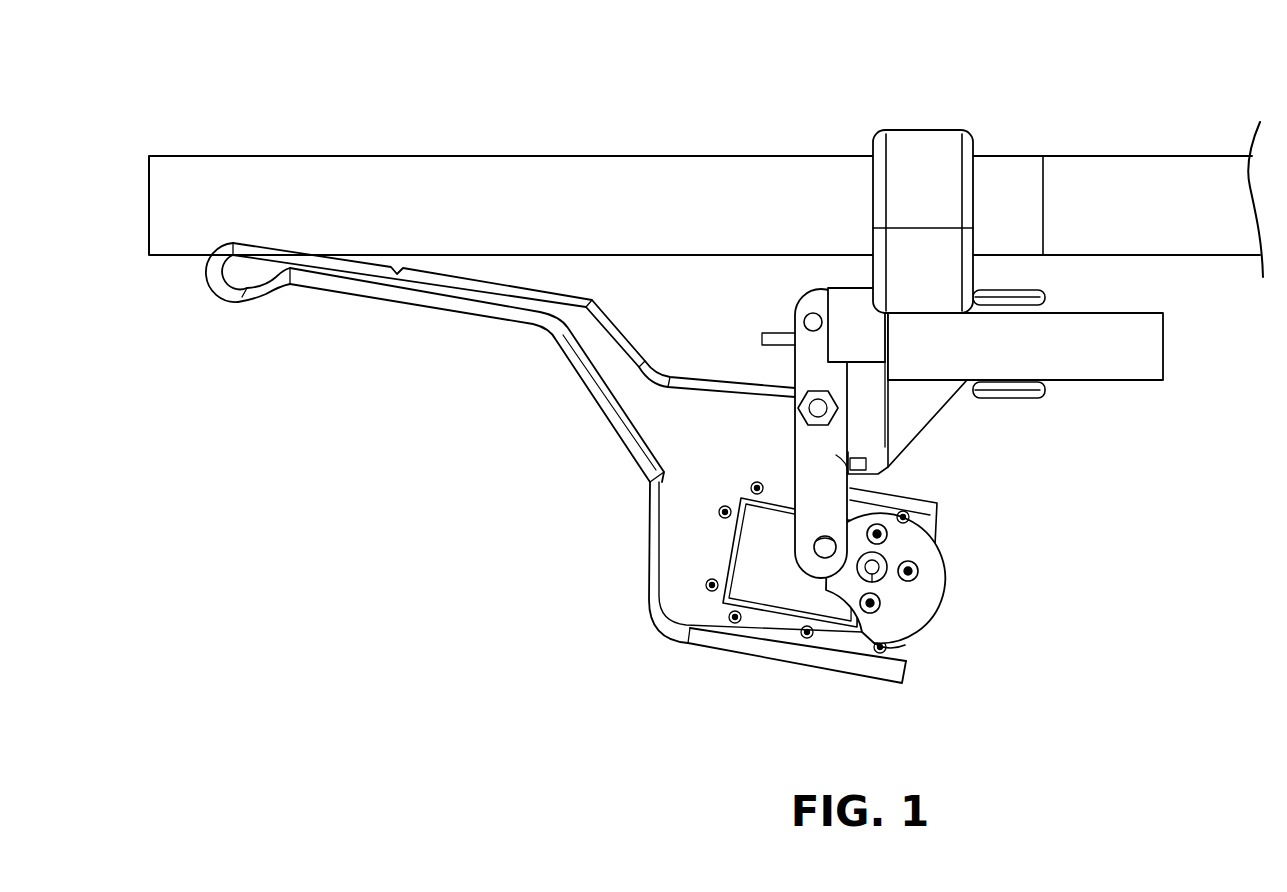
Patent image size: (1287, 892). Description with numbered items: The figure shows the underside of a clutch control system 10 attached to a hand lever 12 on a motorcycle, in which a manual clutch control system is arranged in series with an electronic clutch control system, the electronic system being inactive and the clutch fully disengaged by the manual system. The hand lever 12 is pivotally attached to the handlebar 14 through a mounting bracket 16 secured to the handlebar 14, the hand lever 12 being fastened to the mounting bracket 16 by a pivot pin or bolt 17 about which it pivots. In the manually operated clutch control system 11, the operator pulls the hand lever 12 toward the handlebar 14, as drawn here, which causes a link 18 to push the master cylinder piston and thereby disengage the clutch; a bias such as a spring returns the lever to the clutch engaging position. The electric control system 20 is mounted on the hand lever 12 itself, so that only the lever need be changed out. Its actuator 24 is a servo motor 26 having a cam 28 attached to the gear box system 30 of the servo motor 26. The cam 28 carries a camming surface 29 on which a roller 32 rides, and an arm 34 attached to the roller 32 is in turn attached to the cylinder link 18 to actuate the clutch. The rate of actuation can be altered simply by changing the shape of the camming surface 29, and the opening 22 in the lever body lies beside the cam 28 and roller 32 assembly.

The clutch control system 10 is at (550, 601).
The manually operated clutch control system 11 is at (537, 370).
The hand lever 12 is at (451, 293).
The handlebar 14 is at (738, 187).
The mounting bracket 16 is at (925, 173).
The pivot pin or bolt 17 is at (824, 407).
The link 18 is at (777, 332).
The electric control system 20 is at (968, 620).
The window opening 22 is at (775, 596).
The actuator 24 is at (808, 588).
The servo motor 26 is at (755, 567).
The cam 28 is at (913, 572).
The camming surface 29 is at (868, 614).
The gear box system 30 is at (873, 566).
The roller 32 is at (830, 543).
The arm 34 is at (820, 468).